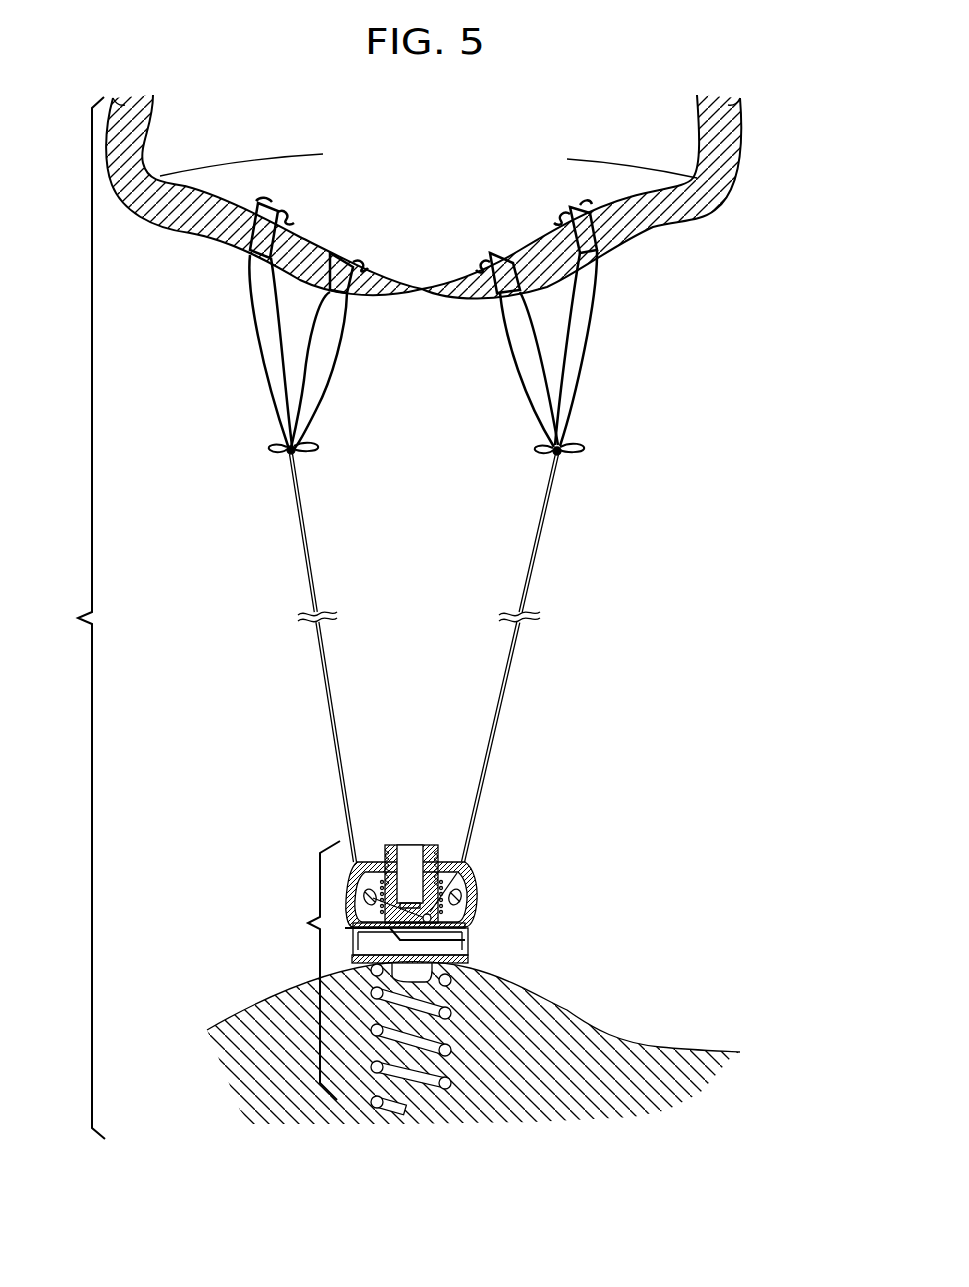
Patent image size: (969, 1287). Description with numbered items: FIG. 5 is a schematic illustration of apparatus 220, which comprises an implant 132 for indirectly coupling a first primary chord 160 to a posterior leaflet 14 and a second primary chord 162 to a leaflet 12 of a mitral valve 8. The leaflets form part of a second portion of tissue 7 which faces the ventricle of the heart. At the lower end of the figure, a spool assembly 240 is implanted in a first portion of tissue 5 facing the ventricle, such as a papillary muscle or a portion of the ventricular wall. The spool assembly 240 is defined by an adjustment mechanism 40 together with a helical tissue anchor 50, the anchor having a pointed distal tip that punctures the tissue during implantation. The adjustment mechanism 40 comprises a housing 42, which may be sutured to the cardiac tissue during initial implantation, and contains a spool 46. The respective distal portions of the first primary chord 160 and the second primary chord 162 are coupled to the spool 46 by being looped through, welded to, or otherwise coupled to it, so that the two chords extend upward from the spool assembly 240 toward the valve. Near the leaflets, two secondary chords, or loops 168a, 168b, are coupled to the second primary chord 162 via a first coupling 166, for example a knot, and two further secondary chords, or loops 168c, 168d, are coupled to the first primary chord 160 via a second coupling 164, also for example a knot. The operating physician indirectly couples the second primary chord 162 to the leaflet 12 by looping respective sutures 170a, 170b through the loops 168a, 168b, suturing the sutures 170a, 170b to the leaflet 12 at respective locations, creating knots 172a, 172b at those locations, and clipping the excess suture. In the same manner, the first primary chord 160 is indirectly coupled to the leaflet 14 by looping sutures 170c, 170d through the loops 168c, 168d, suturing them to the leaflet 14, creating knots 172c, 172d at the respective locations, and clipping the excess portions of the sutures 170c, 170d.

The apparatus 220 is at (717, 62).
The mitral valve 8 is at (423, 187).
The second portion of tissue 7 is at (727, 245).
The leaflet 12 is at (195, 224).
The posterior leaflet 14 is at (648, 227).
The suture 170a is at (257, 238).
The suture 170b is at (372, 283).
The suture 170c is at (503, 285).
The suture 170d is at (605, 225).
The knot 172a is at (277, 211).
The knot 172b is at (350, 262).
The knot 172c is at (497, 272).
The knot 172d is at (570, 211).
The secondary chord loop 168a is at (280, 347).
The secondary chord loop 168b is at (307, 373).
The secondary chord loop 168c is at (537, 357).
The secondary chord loop 168d is at (577, 303).
The first coupling 166 is at (300, 457).
The second coupling 164 is at (570, 453).
The second primary chord 162 is at (334, 747).
The first primary chord 160 is at (497, 747).
The implant 132 is at (71, 618).
The adjustment mechanism 40 is at (449, 894).
The spool 46 is at (448, 900).
The housing 42 is at (472, 913).
The spool assembly 240 is at (301, 970).
The helical tissue anchor 50 is at (450, 1013).
The first portion of tissue 5 is at (548, 1040).